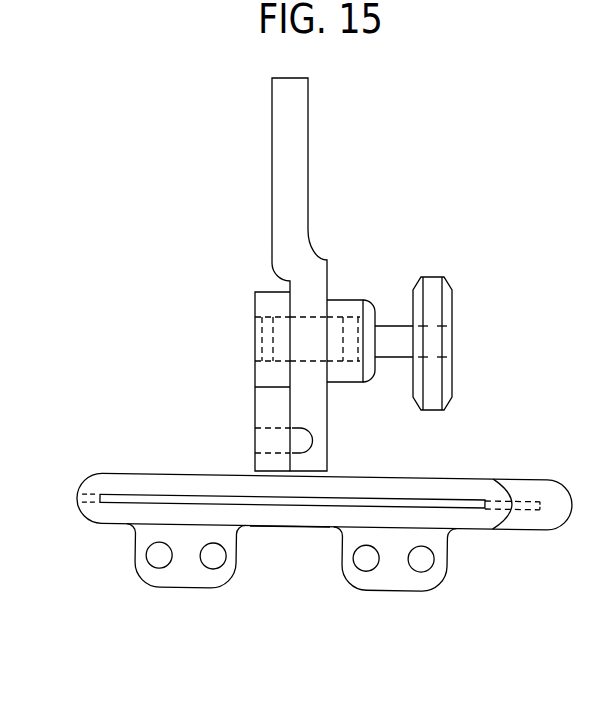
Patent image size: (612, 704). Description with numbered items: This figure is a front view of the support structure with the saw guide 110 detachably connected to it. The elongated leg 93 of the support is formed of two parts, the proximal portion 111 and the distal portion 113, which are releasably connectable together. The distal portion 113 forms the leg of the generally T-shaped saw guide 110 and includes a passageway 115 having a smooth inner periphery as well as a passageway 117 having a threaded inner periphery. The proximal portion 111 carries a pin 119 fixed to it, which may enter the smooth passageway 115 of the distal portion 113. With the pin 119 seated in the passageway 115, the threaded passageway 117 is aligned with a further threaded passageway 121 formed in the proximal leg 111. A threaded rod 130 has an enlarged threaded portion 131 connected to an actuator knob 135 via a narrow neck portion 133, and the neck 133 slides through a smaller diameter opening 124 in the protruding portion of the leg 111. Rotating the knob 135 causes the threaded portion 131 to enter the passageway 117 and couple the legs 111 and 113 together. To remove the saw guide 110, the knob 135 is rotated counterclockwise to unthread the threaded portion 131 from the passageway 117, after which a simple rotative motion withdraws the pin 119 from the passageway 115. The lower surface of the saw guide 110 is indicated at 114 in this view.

The clamp assembly 93 is at (246, 262).
The base plate 110 is at (180, 597).
The upright arm 111 is at (308, 293).
The block 113 is at (268, 403).
The base bottom surface 114 is at (278, 540).
The lower bore 115 is at (312, 450).
The threaded bore 117 is at (262, 318).
The hole 119 is at (300, 436).
The screw head 121 is at (343, 325).
The screw head shoulder 124 is at (375, 330).
The knob assembly 130 is at (459, 386).
The bore in arm 131 is at (300, 342).
The shaft 133 is at (395, 345).
The knob wheel 135 is at (433, 300).